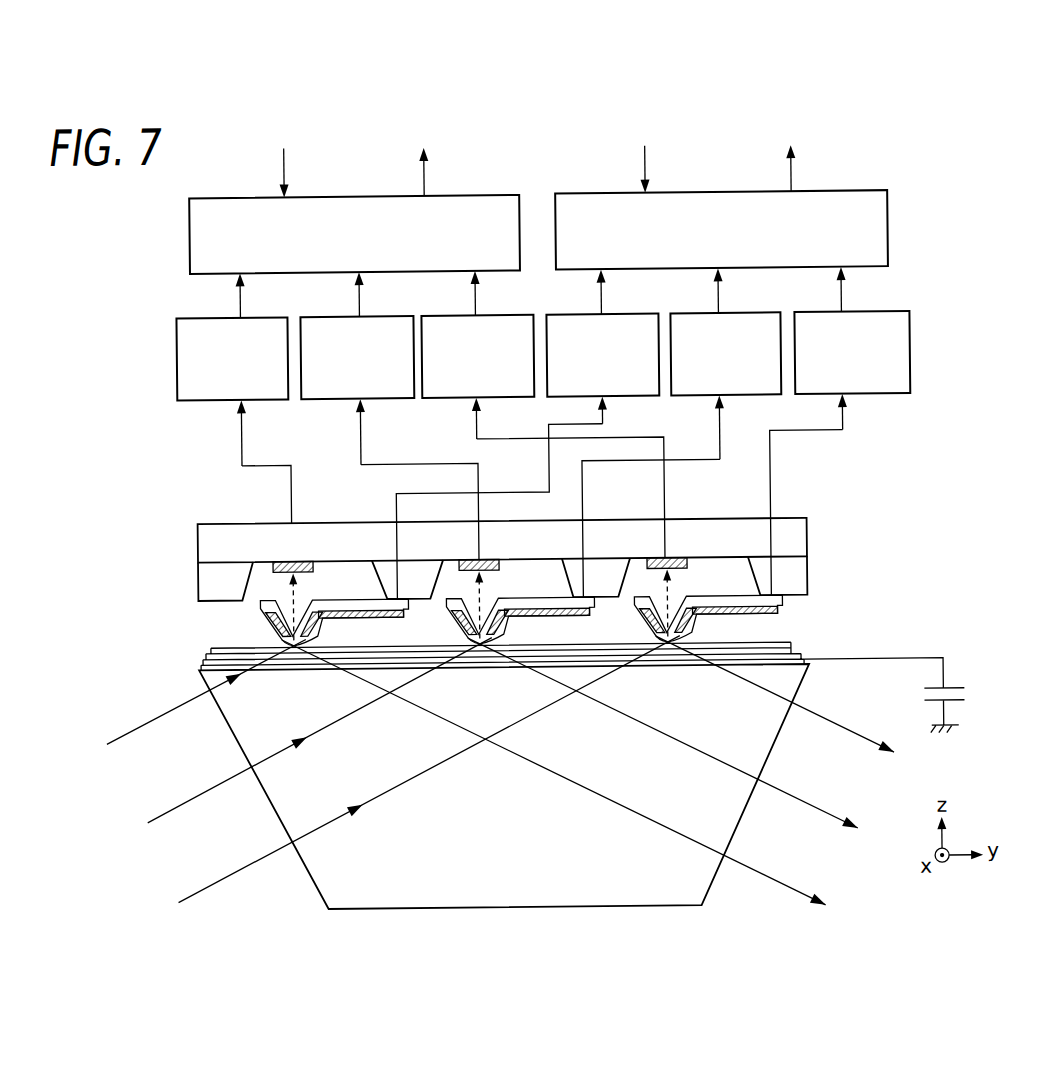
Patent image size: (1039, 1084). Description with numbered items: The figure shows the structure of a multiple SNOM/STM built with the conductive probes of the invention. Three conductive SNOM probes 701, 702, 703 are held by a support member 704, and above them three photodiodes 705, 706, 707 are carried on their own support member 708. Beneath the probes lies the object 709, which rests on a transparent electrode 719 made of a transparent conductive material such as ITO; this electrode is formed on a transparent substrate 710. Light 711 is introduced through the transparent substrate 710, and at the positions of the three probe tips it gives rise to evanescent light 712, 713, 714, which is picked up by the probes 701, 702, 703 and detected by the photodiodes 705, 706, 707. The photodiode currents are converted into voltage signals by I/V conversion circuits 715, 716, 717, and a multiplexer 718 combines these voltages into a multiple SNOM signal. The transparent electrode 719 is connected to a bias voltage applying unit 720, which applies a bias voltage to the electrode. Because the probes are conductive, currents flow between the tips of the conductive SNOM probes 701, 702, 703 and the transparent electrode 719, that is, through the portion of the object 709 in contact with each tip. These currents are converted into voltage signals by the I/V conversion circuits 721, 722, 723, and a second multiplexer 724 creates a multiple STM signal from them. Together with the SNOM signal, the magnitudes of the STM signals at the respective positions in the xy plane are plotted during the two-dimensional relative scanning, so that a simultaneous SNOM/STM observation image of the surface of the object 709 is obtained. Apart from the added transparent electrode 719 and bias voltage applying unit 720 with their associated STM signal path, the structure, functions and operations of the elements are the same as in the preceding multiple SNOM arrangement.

The conductive SNOM probe 1 701 is at (270, 637).
The conductive SNOM probe 2 702 is at (460, 634).
The conductive SNOM probe 3 703 is at (643, 636).
The support member for the probes 704 is at (810, 571).
The photodiode 1 705 is at (310, 557).
The photodiode 2 706 is at (490, 558).
The photodiode 3 707 is at (680, 559).
The support member for the photodiodes 708 is at (810, 527).
The object 709 is at (793, 647).
The transparent substrate 710 is at (566, 907).
The light 711 is at (178, 802).
The evanescent light 1 712 is at (300, 590).
The evanescent light 2 713 is at (473, 590).
The evanescent light 3 714 is at (690, 592).
The I/V conversion circuit 1 715 is at (247, 315).
The I/V conversion circuit 2 716 is at (377, 316).
The I/V conversion circuit 3 717 is at (493, 314).
The multiplexer 1 718 is at (467, 195).
The transparent electrode 719 is at (803, 676).
The bias voltage applying unit 720 is at (927, 706).
The I/V conversion circuit 1' 721 is at (615, 311).
The I/V conversion circuit 2' 722 is at (733, 311).
The I/V conversion circuit 3' 723 is at (875, 311).
The multiplexer 2 724 is at (842, 194).